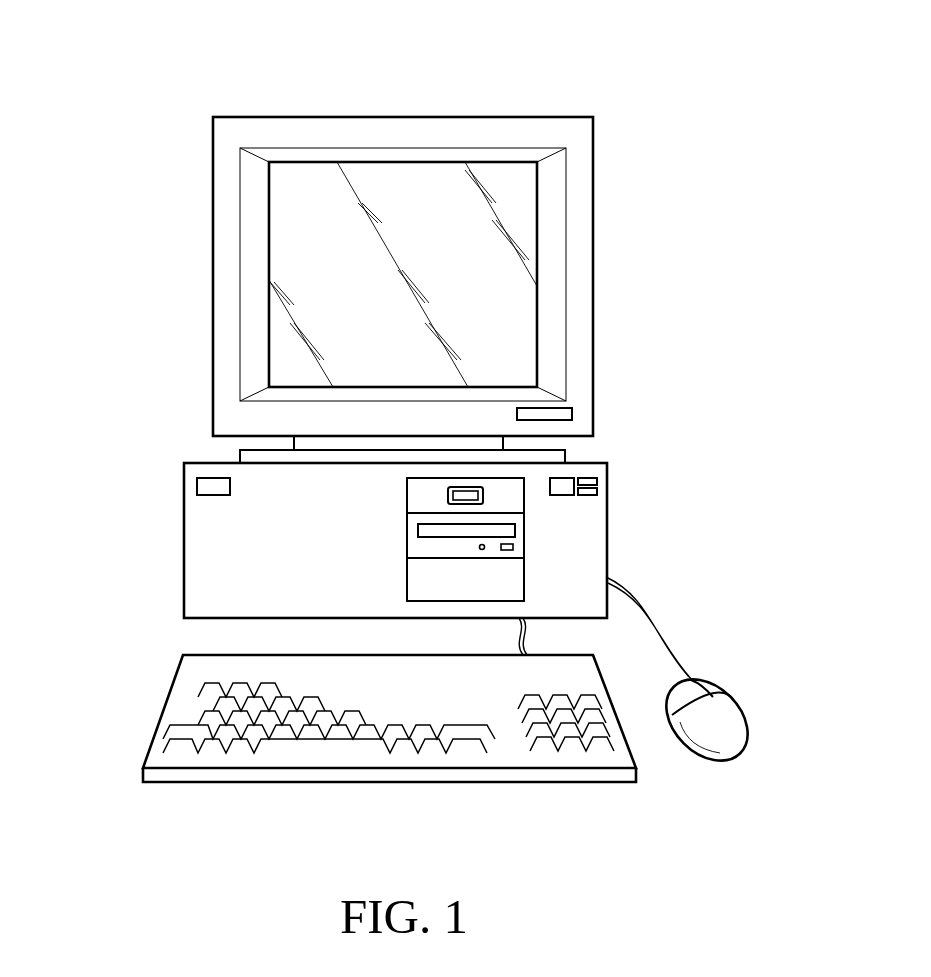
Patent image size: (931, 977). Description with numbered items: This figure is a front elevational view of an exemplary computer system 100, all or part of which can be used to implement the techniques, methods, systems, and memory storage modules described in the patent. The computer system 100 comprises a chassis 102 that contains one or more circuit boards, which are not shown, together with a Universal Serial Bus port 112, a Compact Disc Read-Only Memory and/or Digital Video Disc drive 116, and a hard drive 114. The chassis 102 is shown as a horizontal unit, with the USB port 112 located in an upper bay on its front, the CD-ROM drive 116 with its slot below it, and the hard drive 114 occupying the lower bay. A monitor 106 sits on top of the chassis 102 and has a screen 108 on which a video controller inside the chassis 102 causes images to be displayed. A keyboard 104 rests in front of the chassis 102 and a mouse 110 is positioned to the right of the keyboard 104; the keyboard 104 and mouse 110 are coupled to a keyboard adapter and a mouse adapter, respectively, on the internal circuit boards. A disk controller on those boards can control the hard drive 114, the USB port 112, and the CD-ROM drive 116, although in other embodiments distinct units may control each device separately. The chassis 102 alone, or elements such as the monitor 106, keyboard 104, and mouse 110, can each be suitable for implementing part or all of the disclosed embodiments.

The computer system 100 is at (590, 91).
The chassis 102 is at (184, 543).
The keyboard 104 is at (166, 702).
The monitor 106 is at (288, 117).
The screen 108 is at (318, 281).
The mouse 110 is at (725, 712).
The Universal Serial Bus (USB) port 112 is at (488, 492).
The hard drive 114 is at (518, 578).
The Compact Disc Read-Only Memory (CD-ROM) and/or Digital Video Disc (DVD) drive 116 is at (517, 535).